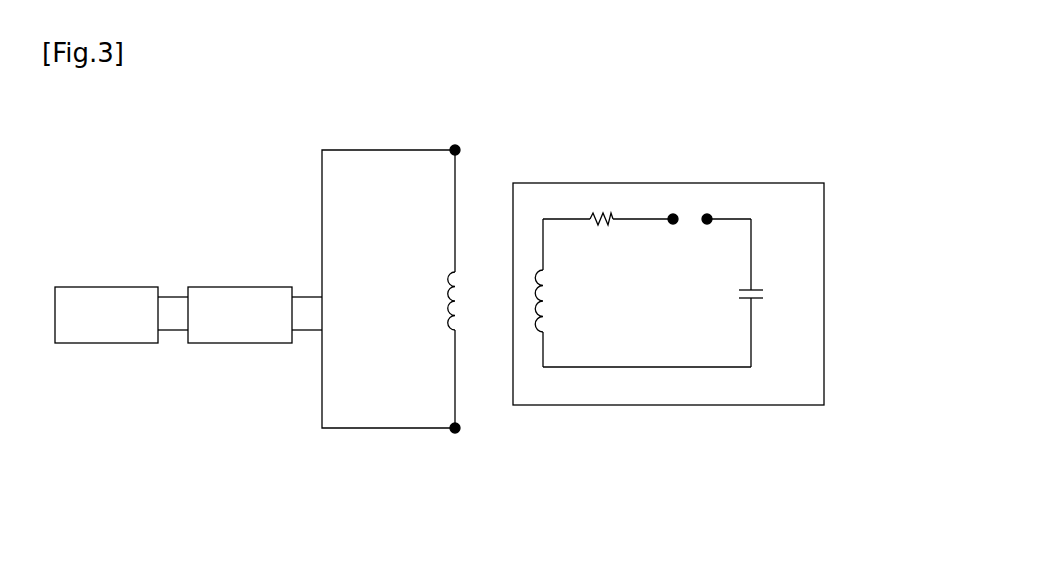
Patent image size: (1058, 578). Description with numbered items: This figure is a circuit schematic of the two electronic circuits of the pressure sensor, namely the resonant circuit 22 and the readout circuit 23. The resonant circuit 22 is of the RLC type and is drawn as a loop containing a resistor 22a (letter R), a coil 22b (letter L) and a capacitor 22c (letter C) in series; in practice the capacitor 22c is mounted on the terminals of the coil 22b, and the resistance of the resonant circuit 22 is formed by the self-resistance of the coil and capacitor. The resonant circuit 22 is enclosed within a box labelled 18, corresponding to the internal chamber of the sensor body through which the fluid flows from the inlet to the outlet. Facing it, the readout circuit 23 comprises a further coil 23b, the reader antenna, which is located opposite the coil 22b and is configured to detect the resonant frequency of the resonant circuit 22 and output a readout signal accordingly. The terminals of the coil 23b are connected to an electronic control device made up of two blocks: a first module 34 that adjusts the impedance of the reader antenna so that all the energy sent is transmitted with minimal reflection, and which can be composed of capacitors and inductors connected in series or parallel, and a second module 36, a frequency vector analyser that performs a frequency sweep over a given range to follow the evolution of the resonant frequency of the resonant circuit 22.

The internal chamber 18 is at (834, 266).
The resonant circuit 22 is at (777, 370).
The resistor 22a is at (601, 215).
The coil 22b is at (535, 323).
The capacitor 22c is at (752, 288).
The readout circuit 23 is at (390, 442).
The coil 23b is at (440, 293).
The first module 34 is at (245, 345).
The second module 36 is at (100, 345).